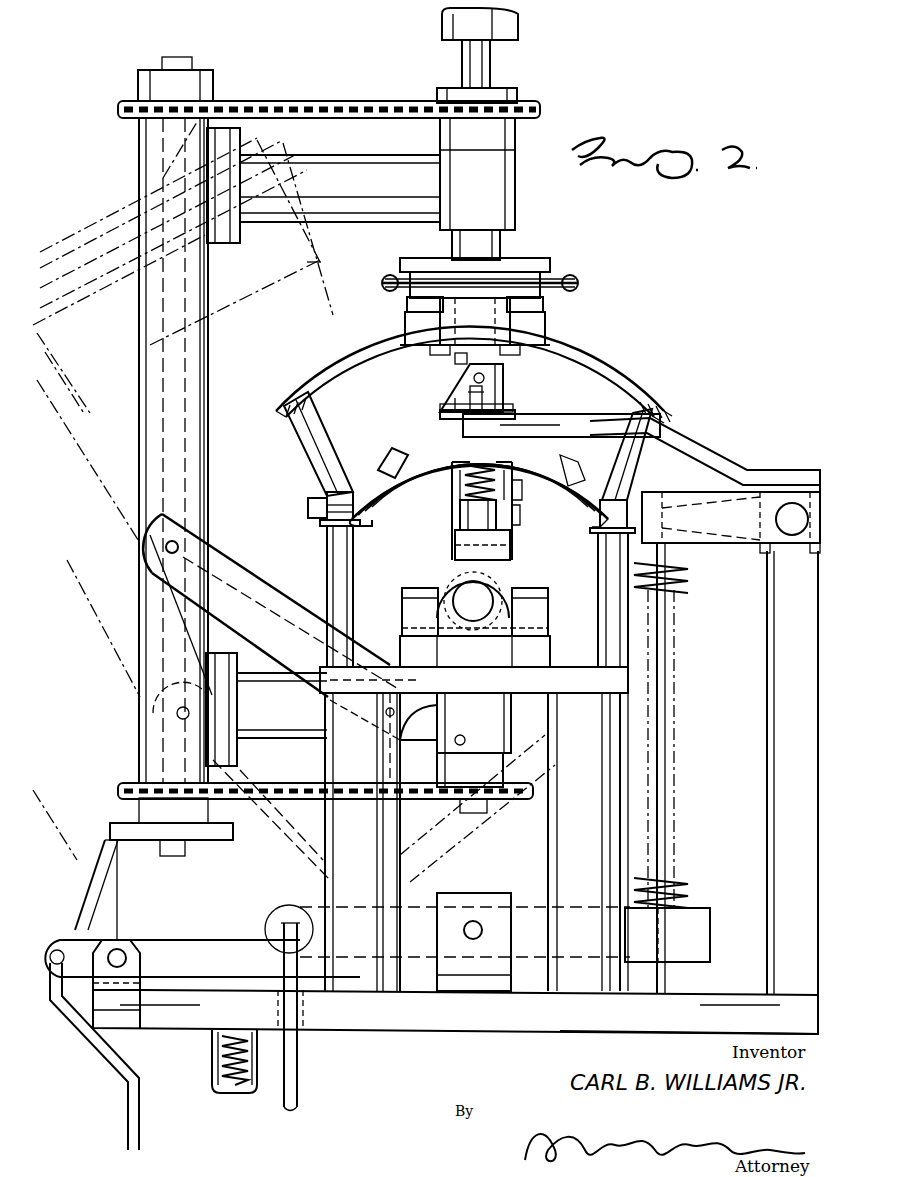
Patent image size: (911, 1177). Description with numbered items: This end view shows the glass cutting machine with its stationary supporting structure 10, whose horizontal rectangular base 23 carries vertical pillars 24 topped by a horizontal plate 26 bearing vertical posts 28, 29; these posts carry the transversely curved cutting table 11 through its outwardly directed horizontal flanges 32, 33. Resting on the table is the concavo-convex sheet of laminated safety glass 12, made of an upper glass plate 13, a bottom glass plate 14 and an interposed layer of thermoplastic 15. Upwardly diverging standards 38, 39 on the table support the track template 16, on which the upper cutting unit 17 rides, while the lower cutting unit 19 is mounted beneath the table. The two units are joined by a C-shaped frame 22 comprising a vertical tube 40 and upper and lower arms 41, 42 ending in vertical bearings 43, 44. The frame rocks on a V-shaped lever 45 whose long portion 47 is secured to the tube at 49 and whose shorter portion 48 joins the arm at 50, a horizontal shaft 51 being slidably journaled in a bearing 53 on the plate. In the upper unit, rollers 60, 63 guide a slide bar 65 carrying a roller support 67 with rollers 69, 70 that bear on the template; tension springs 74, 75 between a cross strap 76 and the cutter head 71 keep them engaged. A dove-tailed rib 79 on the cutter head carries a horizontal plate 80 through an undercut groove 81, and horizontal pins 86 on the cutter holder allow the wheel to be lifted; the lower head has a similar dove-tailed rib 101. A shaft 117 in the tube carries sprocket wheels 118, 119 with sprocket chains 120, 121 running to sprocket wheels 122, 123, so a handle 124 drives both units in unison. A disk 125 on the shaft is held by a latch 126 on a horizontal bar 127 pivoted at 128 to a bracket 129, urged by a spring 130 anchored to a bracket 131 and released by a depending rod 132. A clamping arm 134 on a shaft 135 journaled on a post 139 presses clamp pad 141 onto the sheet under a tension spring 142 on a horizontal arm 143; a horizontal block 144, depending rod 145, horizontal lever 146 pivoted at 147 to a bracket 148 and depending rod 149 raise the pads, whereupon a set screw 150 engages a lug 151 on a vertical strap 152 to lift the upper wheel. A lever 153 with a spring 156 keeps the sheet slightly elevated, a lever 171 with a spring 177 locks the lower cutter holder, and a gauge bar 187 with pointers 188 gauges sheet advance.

The stationary supporting structure 10 is at (387, 1042).
The cutting table 11 is at (396, 498).
The sheet of laminated safety glass 12 is at (573, 471).
The upper glass plate 13 is at (576, 479).
The bottom glass plate 14 is at (583, 518).
The interposed layer of thermoplastic 15 is at (576, 490).
The track template 16 is at (590, 352).
The upper cutting unit 17 is at (507, 363).
The lower cutting unit 19 is at (446, 525).
The C-shaped frame 22 is at (208, 428).
The base 23 is at (560, 1030).
The vertical pillars 24 is at (570, 850).
The horizontal plate 26 is at (572, 692).
The vertical posts 28 is at (328, 546).
The vertical posts 29 is at (598, 578).
The horizontal flange 32 is at (322, 521).
The horizontal flange 33 is at (598, 536).
The standard 38 is at (303, 440).
The standard 39 is at (640, 456).
The vertical tube 40 is at (152, 410).
The upper arm 41 is at (395, 157).
The lower arm 42 is at (261, 671).
The vertical bearing 43 is at (490, 170).
The vertical bearing 44 is at (490, 712).
The V-shaped lever 45 is at (257, 579).
The long portion of lever 47 is at (228, 558).
The shorter portion of lever 48 is at (404, 616).
The lever-to-tube connection 49 is at (165, 548).
The lever-to-arm connection 50 is at (386, 712).
The horizontal shaft 51 is at (495, 592).
The bearing 53 is at (540, 661).
The roller 60 is at (407, 305).
The rollers 63 is at (543, 304).
The slide bar 65 is at (475, 308).
The roller support 67 is at (425, 347).
The roller 69 is at (545, 323).
The roller 70 is at (418, 328).
The cutter head 71 is at (430, 262).
The tension spring 74 is at (565, 283).
The tension spring 75 is at (384, 280).
The cross strap 76 is at (470, 285).
The dove-tailed rib 79 is at (455, 358).
The horizontal plate 80 is at (468, 386).
The undercut groove 81 is at (485, 379).
The horizontal pins 86 is at (445, 406).
The dove-tailed rib 101 is at (496, 545).
The shaft 117 is at (165, 325).
The sprocket wheel 118 is at (118, 109).
The sprocket wheel 119 is at (118, 790).
The sprocket chain 120 is at (335, 101).
The sprocket chain 121 is at (245, 800).
The sprocket wheel 122 is at (467, 106).
The sprocket wheel 123 is at (490, 805).
The handle 124 is at (485, 50).
The disk 125 is at (190, 846).
The latch 126 is at (110, 876).
The horizontal bar 127 is at (200, 948).
The pivot 128 is at (120, 950).
The bracket 129 is at (125, 1027).
The spring 130 is at (220, 1066).
The bracket 131 is at (235, 1090).
The depending rod 132 is at (92, 1048).
The clamping arm 134 is at (632, 420).
The shaft 135 is at (790, 540).
The post 139 is at (770, 774).
The clamp pad 141 is at (405, 452).
The tension spring 142 is at (680, 895).
The horizontal arm 143 is at (715, 545).
The horizontal block 144 is at (685, 500).
The depending rod 145 is at (666, 745).
The horizontal lever 146 is at (690, 930).
The pivot 147 is at (478, 925).
The bracket 148 is at (466, 978).
The depending rod 149 is at (292, 1046).
The set screw 150 is at (466, 418).
The lug 151 is at (522, 425).
The vertical strap 152 is at (455, 400).
The lever 153 is at (465, 527).
The spring 156 is at (455, 480).
The lever 171 is at (522, 495).
The spring 177 is at (520, 515).
The gauge bar 187 is at (308, 506).
The pointers 188 is at (345, 494).